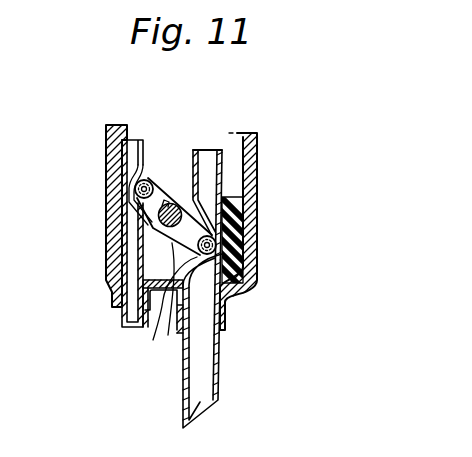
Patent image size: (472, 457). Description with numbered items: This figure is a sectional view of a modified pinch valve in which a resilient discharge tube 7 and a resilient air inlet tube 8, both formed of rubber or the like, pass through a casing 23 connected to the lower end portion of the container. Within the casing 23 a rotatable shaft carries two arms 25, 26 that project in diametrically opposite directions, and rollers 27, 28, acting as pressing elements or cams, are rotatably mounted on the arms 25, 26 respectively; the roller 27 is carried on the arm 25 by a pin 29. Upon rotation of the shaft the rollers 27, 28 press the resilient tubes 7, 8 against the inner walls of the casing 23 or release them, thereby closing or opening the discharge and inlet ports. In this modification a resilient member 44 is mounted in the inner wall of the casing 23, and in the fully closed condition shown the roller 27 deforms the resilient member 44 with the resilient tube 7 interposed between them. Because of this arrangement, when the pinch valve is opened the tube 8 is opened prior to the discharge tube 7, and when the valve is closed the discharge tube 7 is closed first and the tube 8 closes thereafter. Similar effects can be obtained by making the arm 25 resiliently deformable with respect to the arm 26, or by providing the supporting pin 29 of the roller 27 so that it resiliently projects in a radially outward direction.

The resilient discharge tube 7 is at (203, 407).
The resilient air inlet tube 8 is at (127, 324).
The casing 23 is at (252, 178).
The arm 25 is at (167, 308).
The arm 26 is at (160, 182).
The roller 27 is at (172, 334).
The roller 28 is at (141, 180).
The pin 29 is at (242, 253).
The resilient member 44 is at (252, 243).